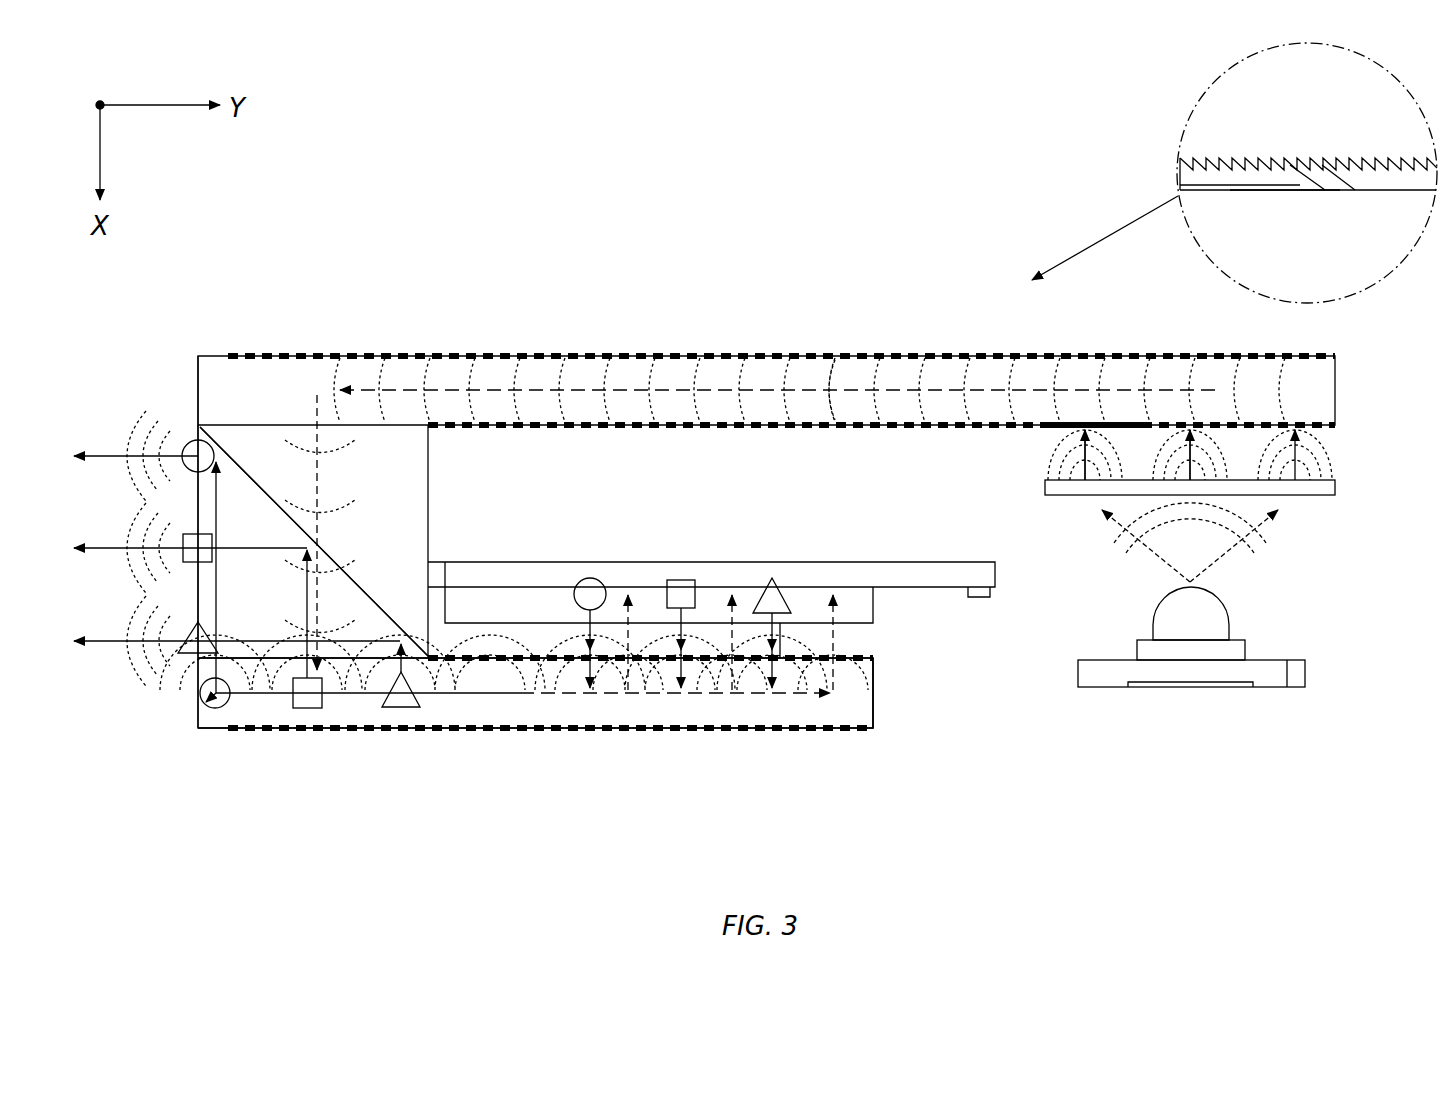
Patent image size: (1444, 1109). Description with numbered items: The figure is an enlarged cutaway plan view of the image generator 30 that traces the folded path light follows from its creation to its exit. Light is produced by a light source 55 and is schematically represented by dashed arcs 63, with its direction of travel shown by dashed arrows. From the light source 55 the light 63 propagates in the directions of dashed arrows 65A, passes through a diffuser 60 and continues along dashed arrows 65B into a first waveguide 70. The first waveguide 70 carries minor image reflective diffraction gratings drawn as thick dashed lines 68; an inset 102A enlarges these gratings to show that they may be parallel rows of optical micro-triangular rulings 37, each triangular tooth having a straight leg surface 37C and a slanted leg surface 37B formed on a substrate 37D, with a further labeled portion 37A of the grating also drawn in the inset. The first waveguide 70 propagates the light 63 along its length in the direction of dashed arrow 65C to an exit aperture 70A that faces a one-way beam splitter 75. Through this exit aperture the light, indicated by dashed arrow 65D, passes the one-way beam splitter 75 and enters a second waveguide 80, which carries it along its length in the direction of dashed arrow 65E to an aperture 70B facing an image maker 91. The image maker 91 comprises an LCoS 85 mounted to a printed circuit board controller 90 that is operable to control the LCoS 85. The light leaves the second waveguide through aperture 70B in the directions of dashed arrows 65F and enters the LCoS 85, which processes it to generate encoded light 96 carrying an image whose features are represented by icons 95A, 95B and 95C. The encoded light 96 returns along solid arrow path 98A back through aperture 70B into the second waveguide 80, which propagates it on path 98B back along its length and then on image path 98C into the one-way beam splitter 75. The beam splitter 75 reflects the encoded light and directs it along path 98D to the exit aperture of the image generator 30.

The image generator 30 is at (478, 162).
The triangular rulings 37 is at (1318, 128).
The base of structured surface 37A is at (1290, 173).
The slanted leg surface 37B is at (1228, 160).
The straight leg surface 37C is at (1345, 170).
The substrate 37D is at (1180, 183).
The inset 102A is at (1193, 112).
The reflective diffraction gratings 68 is at (1097, 422).
The dashed arrow 65C is at (828, 395).
The light 63 is at (700, 377).
The first waveguide 70 is at (668, 366).
The exit aperture 70A is at (230, 425).
The aperture 70B is at (855, 730).
The dashed arrow 65D is at (317, 460).
The encoded light 96 is at (103, 443).
The icon 95A is at (592, 577).
The icon 95B is at (683, 580).
The icon 95C is at (770, 578).
The dashed arrows 65B is at (1085, 455).
The diffuser 60 is at (1318, 487).
The dashed arrows 65A is at (1145, 548).
The light source 55 is at (1280, 682).
The LCoS 85 is at (872, 615).
The printed circuit board controller 90 is at (962, 600).
The image maker 91 is at (878, 668).
The dashed arrows 65F is at (748, 668).
The dashed arrow 65E is at (528, 698).
The path 98A is at (657, 660).
The path 98B is at (352, 697).
The image path 98C is at (275, 645).
The path 98D is at (90, 650).
The one-way beam splitter 75 is at (435, 656).
The second waveguide 80 is at (438, 714).